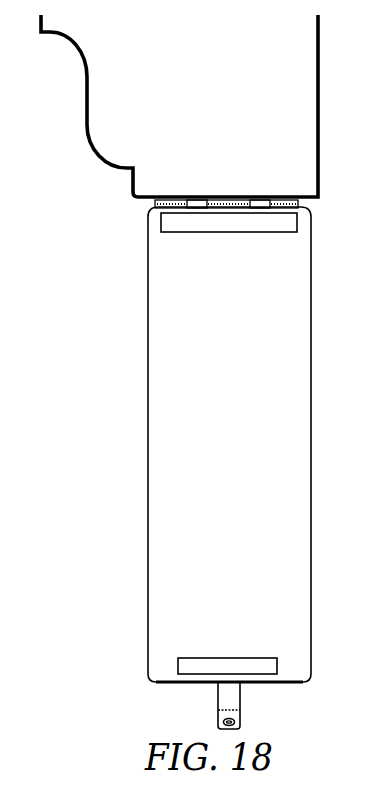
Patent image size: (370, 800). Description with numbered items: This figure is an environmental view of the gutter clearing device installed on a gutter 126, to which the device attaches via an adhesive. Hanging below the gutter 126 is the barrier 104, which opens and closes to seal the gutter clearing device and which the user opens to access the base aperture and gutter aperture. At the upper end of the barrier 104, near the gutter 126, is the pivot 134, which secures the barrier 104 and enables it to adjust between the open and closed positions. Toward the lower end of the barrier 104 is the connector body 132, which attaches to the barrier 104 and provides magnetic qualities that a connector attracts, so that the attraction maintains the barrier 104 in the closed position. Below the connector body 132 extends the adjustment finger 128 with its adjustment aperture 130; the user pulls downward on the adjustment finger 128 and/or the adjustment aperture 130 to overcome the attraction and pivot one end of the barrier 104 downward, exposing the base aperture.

The gutter 126 is at (88, 143).
The barrier 104 is at (149, 463).
The pivot 134 is at (162, 226).
The connector body 132 is at (178, 665).
The adjustment finger 128 is at (218, 702).
The adjustment aperture 130 is at (237, 722).